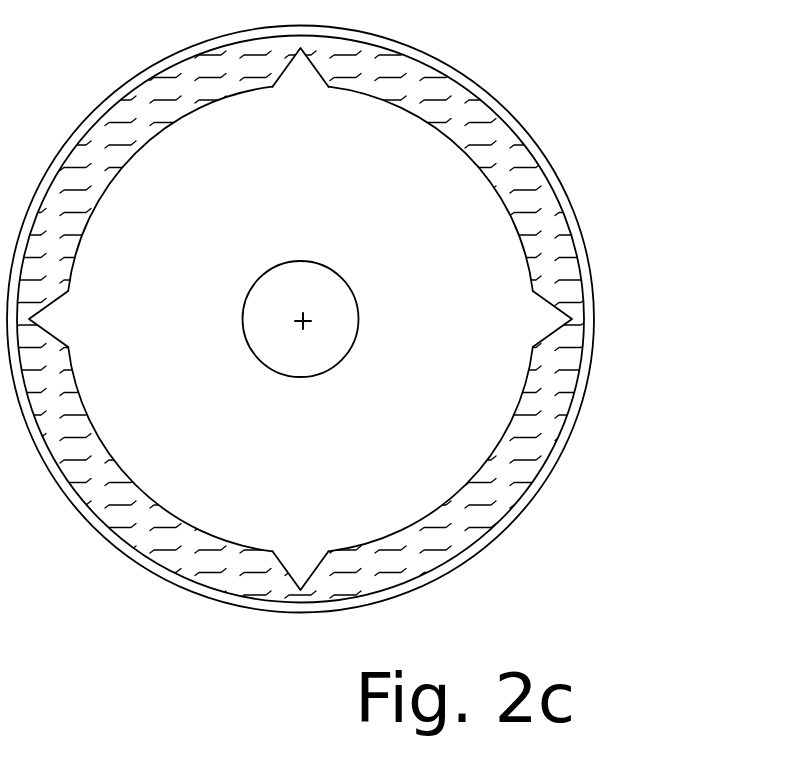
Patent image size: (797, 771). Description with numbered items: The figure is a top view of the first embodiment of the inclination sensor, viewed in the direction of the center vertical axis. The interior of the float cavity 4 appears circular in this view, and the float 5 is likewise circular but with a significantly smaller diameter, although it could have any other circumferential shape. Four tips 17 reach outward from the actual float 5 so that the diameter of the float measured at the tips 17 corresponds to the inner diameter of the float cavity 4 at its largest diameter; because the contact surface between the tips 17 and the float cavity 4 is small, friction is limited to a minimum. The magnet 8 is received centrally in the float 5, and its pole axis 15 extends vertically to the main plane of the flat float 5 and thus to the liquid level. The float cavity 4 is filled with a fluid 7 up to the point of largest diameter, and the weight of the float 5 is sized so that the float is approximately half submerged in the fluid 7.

The float cavity 4 is at (507, 117).
The fluid 7 is at (520, 183).
The float 5 is at (298, 496).
The tips 17 is at (297, 70).
The magnet 8 is at (340, 337).
The pole axis 15 is at (312, 317).